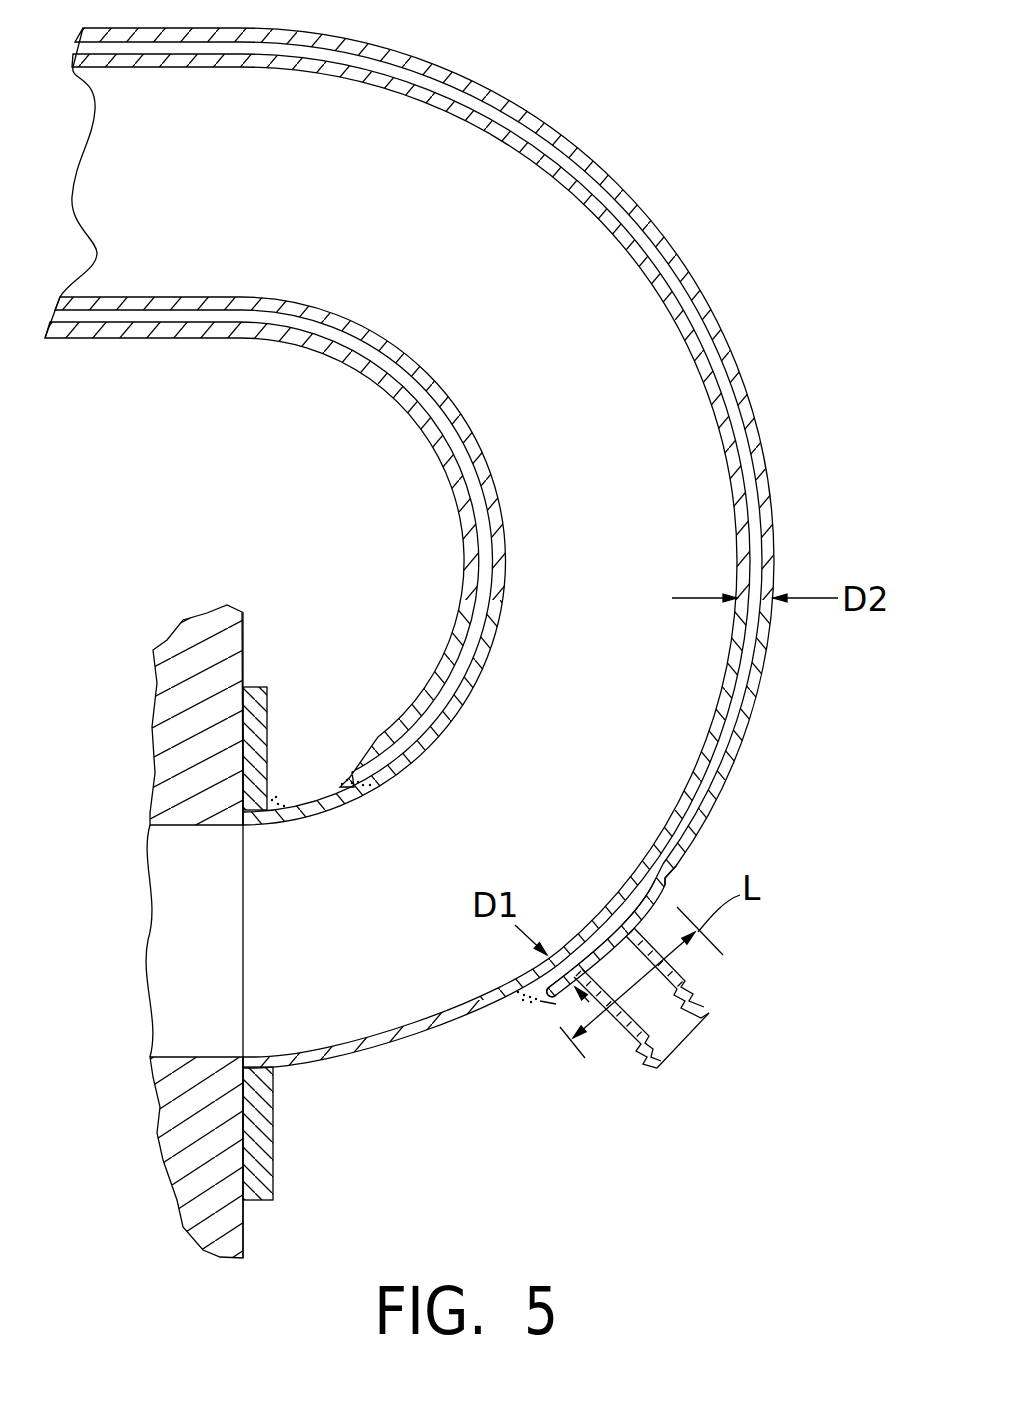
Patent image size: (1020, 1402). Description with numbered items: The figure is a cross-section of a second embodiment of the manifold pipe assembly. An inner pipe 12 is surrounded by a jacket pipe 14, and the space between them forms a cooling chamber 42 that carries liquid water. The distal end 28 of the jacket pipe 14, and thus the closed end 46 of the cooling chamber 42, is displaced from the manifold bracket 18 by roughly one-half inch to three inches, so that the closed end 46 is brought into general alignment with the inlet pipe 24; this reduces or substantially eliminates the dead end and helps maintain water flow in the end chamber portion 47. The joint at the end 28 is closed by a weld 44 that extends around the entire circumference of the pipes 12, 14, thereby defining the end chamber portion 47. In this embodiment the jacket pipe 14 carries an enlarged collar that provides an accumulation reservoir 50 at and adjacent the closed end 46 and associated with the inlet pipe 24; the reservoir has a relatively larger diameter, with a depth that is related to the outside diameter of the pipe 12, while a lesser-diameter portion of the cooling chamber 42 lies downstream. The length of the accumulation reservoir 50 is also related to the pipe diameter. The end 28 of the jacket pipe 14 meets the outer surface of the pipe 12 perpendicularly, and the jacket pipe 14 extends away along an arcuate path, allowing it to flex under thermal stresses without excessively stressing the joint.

The pipe 12 is at (757, 481).
The jacket pipe 14 is at (778, 555).
The manifold bracket 18 is at (268, 727).
The inlet pipe 24 is at (684, 994).
The distal end of the jacket pipe 28 is at (537, 995).
The cooling chamber 42 is at (737, 702).
The weld 44 is at (524, 1000).
The closed end of cooling chamber 46 is at (588, 942).
The end chamber portion 47 is at (536, 1008).
The accumulation reservoir 50 is at (652, 893).